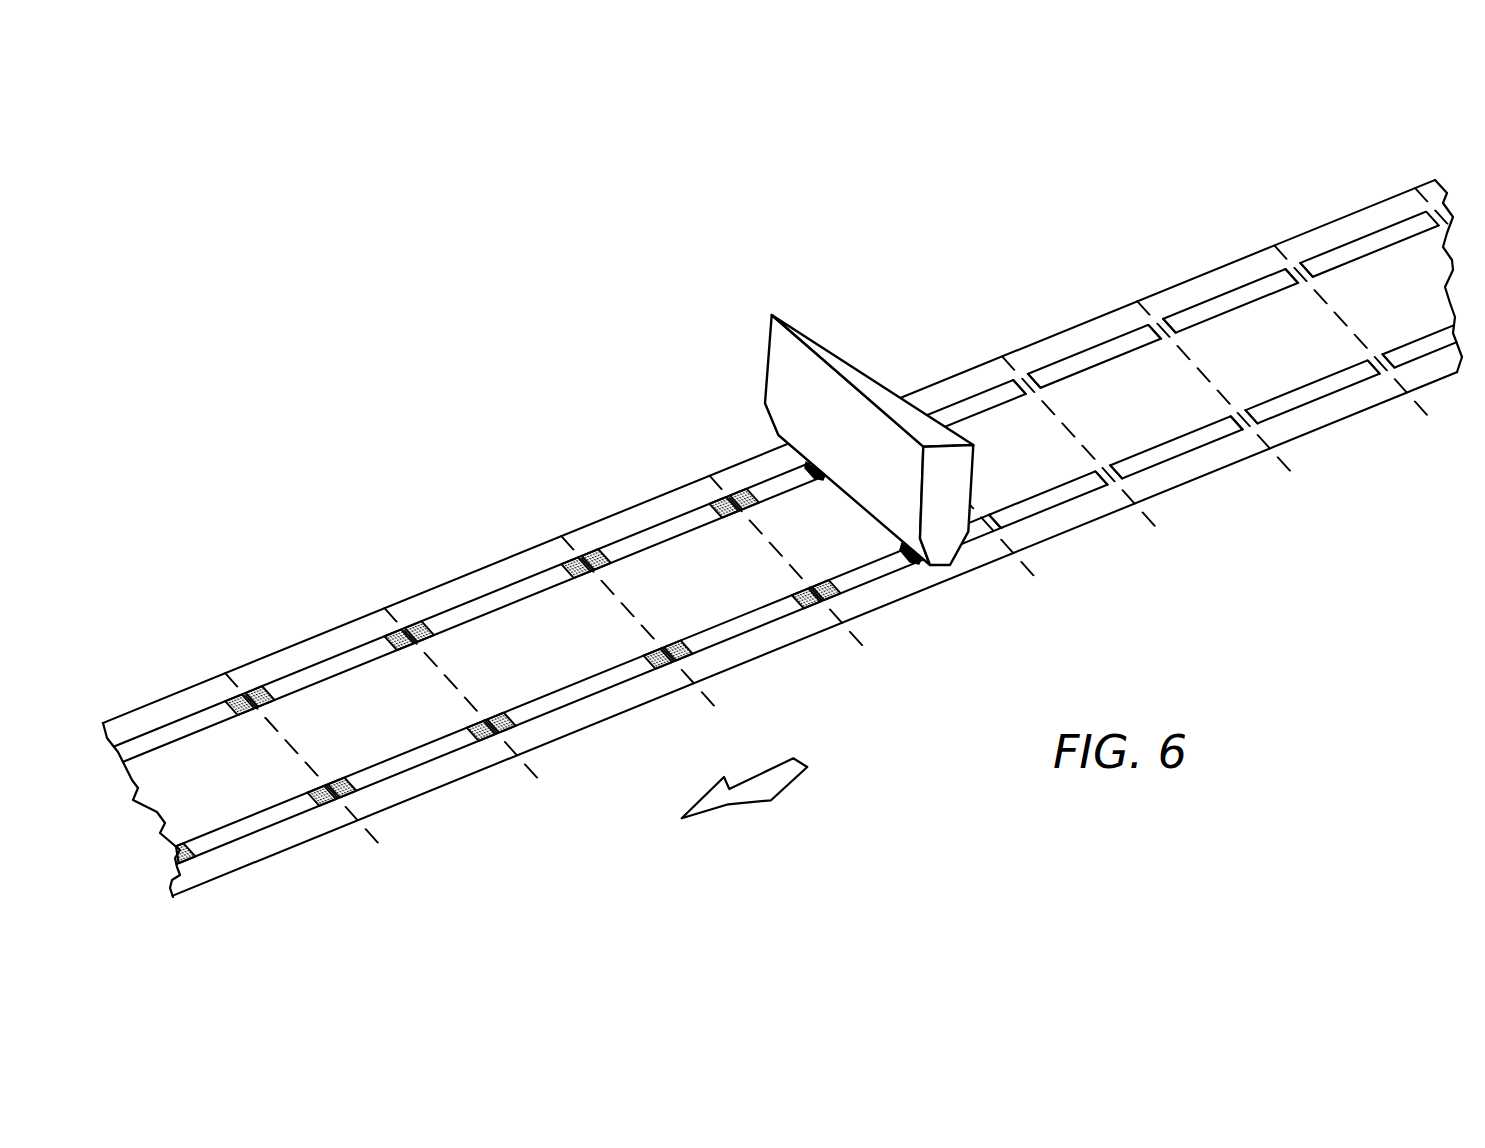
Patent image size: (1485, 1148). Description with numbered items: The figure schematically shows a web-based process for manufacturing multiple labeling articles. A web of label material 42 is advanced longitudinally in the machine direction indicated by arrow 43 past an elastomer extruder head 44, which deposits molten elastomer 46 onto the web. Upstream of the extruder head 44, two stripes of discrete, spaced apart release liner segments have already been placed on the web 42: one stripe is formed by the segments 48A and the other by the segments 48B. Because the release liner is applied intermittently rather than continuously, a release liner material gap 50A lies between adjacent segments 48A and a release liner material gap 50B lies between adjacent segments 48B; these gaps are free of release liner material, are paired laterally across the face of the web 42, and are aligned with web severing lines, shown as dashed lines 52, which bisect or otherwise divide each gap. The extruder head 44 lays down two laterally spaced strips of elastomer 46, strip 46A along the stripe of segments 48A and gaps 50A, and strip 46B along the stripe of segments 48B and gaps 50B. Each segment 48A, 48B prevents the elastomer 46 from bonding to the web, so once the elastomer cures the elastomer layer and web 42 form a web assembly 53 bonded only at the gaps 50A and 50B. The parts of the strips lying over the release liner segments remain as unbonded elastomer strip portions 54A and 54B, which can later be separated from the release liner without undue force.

The web of label material 42 is at (1214, 480).
The arrow 43 is at (774, 784).
The elastomer extruder head 44 is at (826, 332).
The molten elastomer 46 is at (812, 472).
The elastomer strip 46A is at (770, 488).
The elastomer strip 46B is at (865, 578).
The spaced apart segments of release liner material 48A is at (975, 402).
The spaced apart segments of release liner material 48B is at (1055, 500).
The release liner material gap 50A is at (1032, 392).
The release liner material gap 50B is at (1113, 470).
The web severing line 52 is at (208, 659).
The web assembly 53 is at (742, 677).
The unbonded elastomer strip portion 54A is at (548, 557).
The unbonded elastomer strip portion 54B is at (527, 733).